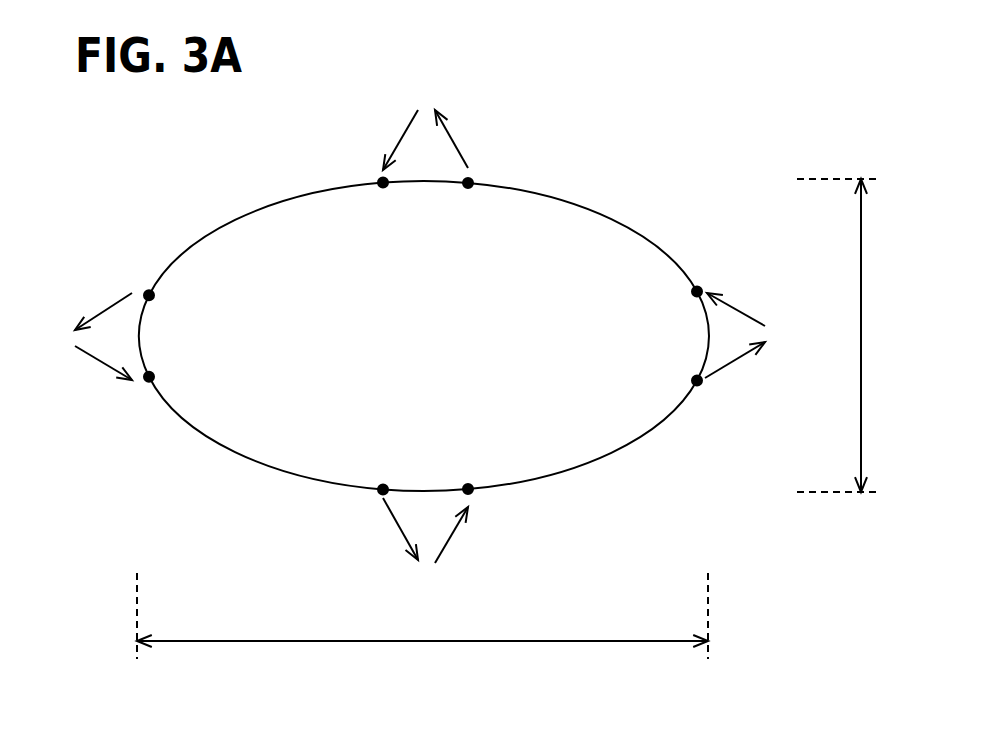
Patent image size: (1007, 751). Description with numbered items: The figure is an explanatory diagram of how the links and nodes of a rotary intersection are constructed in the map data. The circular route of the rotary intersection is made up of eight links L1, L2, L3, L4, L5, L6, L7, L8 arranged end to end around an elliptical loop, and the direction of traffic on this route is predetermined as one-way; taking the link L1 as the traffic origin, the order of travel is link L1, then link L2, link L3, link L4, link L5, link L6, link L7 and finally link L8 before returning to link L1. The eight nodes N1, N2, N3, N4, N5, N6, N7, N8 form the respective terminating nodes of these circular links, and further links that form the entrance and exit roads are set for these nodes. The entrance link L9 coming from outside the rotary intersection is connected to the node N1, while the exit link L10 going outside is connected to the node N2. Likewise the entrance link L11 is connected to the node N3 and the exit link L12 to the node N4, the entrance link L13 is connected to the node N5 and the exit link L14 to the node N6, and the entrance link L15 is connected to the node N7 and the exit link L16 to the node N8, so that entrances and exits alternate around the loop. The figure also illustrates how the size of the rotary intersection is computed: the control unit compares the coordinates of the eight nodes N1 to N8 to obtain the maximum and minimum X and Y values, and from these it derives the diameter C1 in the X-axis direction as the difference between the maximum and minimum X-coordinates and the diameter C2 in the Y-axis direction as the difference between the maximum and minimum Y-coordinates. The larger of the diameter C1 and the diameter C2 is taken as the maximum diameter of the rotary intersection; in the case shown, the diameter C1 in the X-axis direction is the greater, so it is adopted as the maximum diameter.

The node N1 is at (487, 501).
The node N2 is at (709, 397).
The node N3 is at (709, 279).
The node N4 is at (490, 172).
The node N5 is at (366, 172).
The node N6 is at (140, 281).
The node N7 is at (145, 401).
The node N8 is at (366, 501).
The link L1 is at (425, 489).
The link L2 is at (618, 450).
The link L3 is at (708, 330).
The link L4 is at (620, 224).
The link L5 is at (428, 181).
The link L6 is at (227, 224).
The link L7 is at (138, 337).
The link L8 is at (230, 450).
The entrance link L9 is at (446, 545).
The exit link L10 is at (733, 364).
The entrance link L11 is at (743, 312).
The exit link L12 is at (452, 138).
The entrance link L13 is at (404, 133).
The exit link L14 is at (103, 312).
The entrance link L15 is at (88, 355).
The exit link L16 is at (394, 525).
The diameter in the X-axis direction C1 is at (422, 616).
The diameter in the Y-axis direction C2 is at (837, 335).